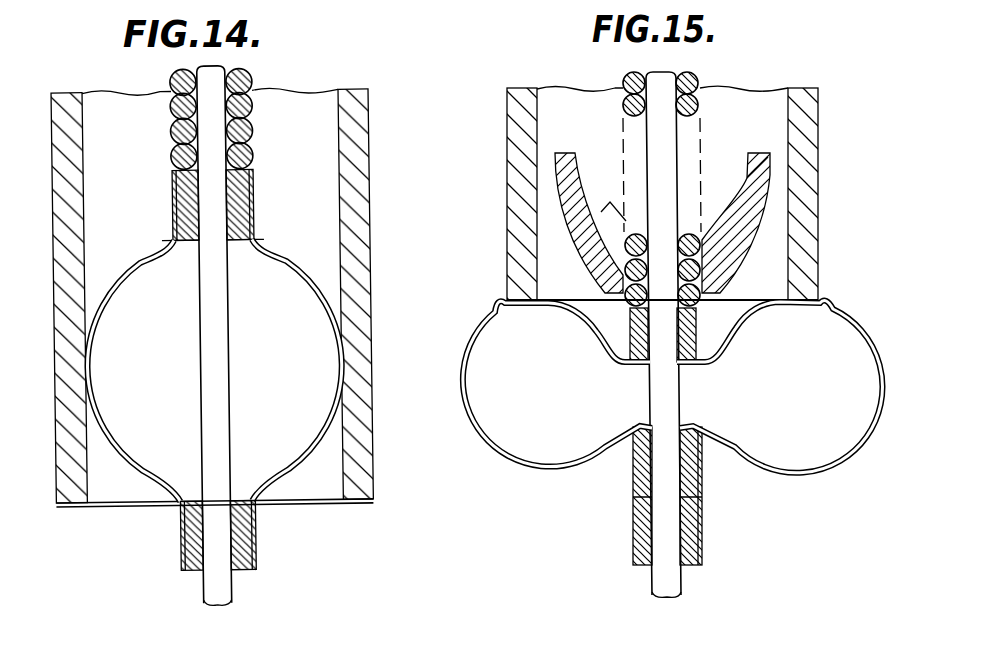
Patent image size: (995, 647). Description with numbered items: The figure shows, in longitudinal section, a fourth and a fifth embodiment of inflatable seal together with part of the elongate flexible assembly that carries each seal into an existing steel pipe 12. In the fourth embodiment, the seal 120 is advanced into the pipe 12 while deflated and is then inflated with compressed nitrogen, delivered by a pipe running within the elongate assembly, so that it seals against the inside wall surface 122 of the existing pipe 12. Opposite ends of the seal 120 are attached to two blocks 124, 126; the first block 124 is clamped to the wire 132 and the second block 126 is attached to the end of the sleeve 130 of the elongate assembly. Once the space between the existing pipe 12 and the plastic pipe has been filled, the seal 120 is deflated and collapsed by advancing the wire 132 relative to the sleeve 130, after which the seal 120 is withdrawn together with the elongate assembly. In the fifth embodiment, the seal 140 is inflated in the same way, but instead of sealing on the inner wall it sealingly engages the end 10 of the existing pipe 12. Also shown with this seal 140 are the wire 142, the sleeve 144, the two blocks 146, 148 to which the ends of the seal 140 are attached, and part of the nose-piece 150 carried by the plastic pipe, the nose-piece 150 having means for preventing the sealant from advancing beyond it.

In FIG. 14, the end 10 is at (360, 503).
In FIG. 15, the end 10 is at (805, 297).
In FIG. 14, the existing steel pipe 12 is at (352, 183).
In FIG. 15, the existing steel pipe 12 is at (800, 95).
In FIG. 14, the seal 120 is at (148, 490).
In FIG. 14, the inside wall surface 122 is at (338, 133).
In FIG. 14, the block 124 is at (187, 552).
In FIG. 14, the block 126 is at (188, 185).
In FIG. 14, the sleeve 130 is at (247, 80).
In FIG. 14, the wire 132 is at (222, 590).
In FIG. 15, the seal 140 is at (577, 472).
In FIG. 15, the wire 142 is at (675, 580).
In FIG. 15, the sleeve 144 is at (690, 80).
In FIG. 15, the block 146 is at (695, 482).
In FIG. 15, the block 148 is at (641, 330).
In FIG. 15, the nose-piece 150 is at (587, 218).